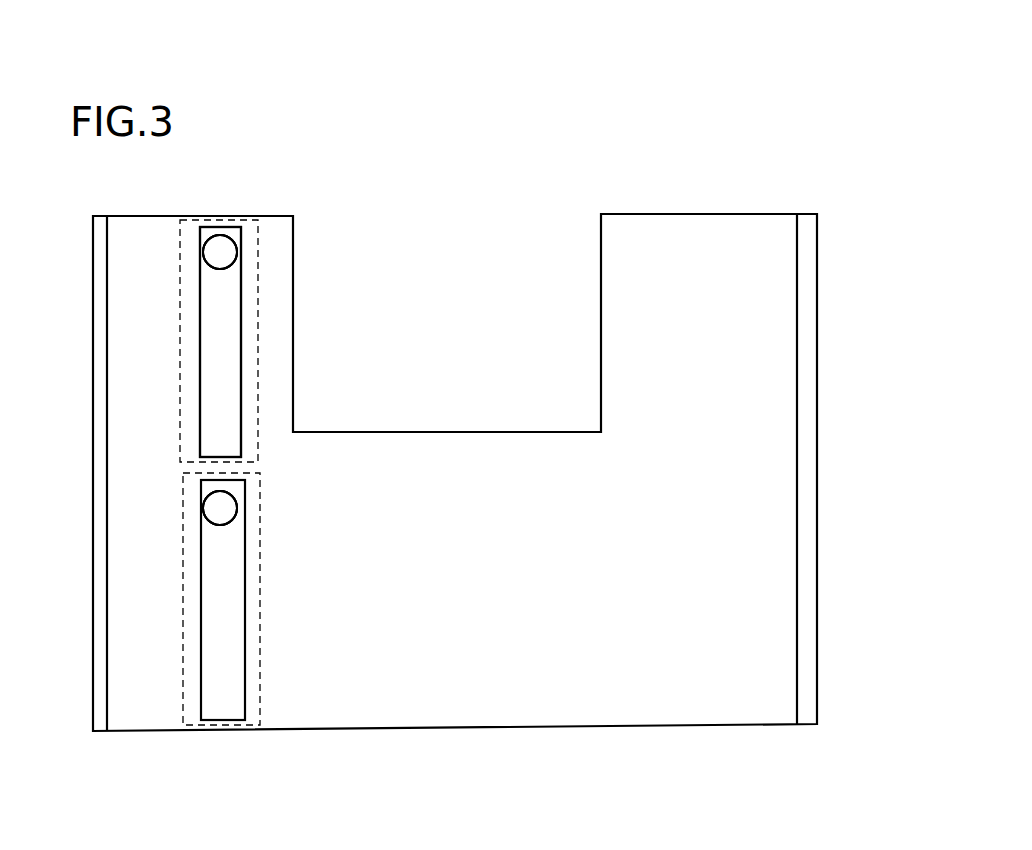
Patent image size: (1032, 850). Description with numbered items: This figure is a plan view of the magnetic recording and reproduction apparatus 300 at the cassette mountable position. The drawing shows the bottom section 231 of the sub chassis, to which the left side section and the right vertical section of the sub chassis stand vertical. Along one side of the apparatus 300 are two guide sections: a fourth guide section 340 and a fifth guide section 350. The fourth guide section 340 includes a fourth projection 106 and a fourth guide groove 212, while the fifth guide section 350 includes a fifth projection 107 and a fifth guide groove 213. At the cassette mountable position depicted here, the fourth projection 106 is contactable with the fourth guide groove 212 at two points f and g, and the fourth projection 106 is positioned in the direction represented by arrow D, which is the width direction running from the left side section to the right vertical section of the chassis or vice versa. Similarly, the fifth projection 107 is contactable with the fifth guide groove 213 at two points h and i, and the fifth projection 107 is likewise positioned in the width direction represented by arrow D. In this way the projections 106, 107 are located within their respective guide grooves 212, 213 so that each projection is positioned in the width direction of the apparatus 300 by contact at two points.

The magnetic recording and reproduction apparatus 300 is at (689, 138).
The bottom section 231 is at (369, 446).
The fourth guide section 340 is at (180, 337).
The fifth guide section 350 is at (183, 663).
The fourth guide groove 212 is at (230, 323).
The fifth guide groove 213 is at (242, 675).
The fourth projection 106 is at (228, 253).
The fifth projection 107 is at (217, 512).
The contact point f is at (203, 254).
The contact point g is at (238, 257).
The contact point h is at (203, 505).
The contact point i is at (238, 508).
The arrow D is at (277, 199).